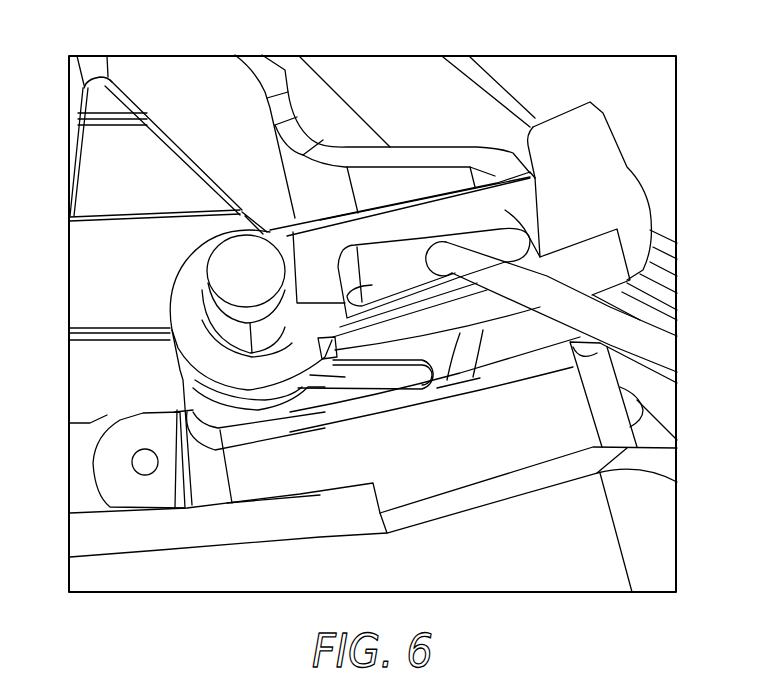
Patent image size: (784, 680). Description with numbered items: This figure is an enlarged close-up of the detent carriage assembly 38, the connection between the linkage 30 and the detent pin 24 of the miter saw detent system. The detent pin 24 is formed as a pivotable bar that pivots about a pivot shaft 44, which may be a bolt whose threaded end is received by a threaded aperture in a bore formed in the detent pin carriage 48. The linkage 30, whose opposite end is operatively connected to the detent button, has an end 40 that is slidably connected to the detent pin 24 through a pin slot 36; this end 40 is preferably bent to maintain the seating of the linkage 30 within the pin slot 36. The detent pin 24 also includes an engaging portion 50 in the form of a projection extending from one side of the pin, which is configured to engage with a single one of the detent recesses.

The detent pin 24 is at (610, 213).
The linkage 30 is at (616, 330).
The pin slot 36 is at (378, 250).
The detent carriage assembly 38 is at (552, 78).
The end of linkage 40 is at (432, 262).
The pivot shaft 44 is at (222, 258).
The detent pin carriage 48 is at (457, 463).
The engaging portion 50 is at (597, 140).